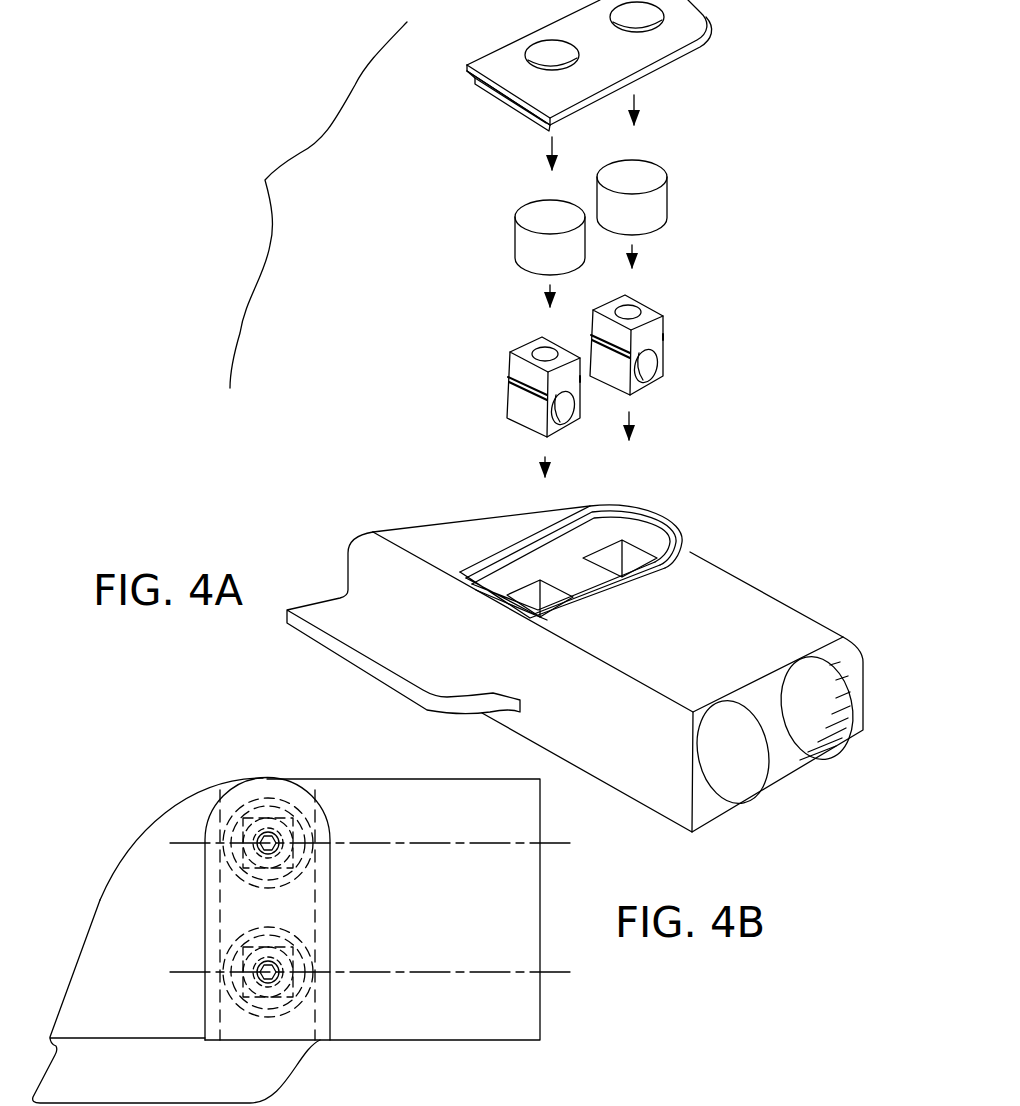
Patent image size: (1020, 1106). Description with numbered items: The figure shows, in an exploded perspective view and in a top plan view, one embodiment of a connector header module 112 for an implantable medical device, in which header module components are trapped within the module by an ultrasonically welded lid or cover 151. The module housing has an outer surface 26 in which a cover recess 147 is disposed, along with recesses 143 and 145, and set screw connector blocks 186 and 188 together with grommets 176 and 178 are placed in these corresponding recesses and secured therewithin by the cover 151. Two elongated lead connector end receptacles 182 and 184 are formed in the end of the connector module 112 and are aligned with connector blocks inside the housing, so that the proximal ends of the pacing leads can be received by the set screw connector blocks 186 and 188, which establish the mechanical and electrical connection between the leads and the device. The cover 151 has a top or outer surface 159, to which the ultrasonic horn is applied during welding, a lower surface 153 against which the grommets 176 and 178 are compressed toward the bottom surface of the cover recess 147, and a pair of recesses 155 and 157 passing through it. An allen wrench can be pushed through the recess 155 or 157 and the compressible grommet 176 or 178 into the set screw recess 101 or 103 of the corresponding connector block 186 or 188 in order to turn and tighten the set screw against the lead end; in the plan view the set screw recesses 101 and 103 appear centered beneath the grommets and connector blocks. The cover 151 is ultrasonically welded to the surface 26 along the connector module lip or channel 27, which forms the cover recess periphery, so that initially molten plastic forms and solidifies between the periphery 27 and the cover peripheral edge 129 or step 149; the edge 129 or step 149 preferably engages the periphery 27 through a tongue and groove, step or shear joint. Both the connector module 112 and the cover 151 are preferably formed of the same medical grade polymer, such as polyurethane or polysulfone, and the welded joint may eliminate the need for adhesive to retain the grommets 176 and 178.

In FIG. 4A, the surface of connector module 26 is at (578, 656).
In FIG. 4B, the surface of connector module 26 is at (450, 790).
In FIG. 4A, the lip or channel 27 is at (667, 537).
In FIG. 4B, the set screw recess 101 is at (315, 840).
In FIG. 4B, the set screw recess 103 is at (315, 975).
In FIG. 4A, the connector header module 112 is at (311, 205).
In FIG. 4B, the connector header module 112 is at (160, 774).
In FIG. 4A, the cover peripheral edge 129 is at (673, 67).
In FIG. 4A, the recess 143 is at (527, 597).
In FIG. 4A, the recess 145 is at (627, 552).
In FIG. 4A, the cover recess 147 is at (573, 560).
In FIG. 4A, the step 149 is at (645, 80).
In FIG. 4B, the step 149 is at (215, 932).
In FIG. 4A, the cover 151 is at (614, 73).
In FIG. 4B, the cover 151 is at (258, 790).
In FIG. 4A, the lower surface of cover 153 is at (507, 103).
In FIG. 4A, the recess 155 is at (553, 53).
In FIG. 4A, the recess 157 is at (702, 47).
In FIG. 4A, the top or outer surface of cover 159 is at (590, 34).
In FIG. 4A, the grommet 176 is at (515, 235).
In FIG. 4B, the grommet 176 is at (313, 1000).
In FIG. 4A, the grommet 178 is at (667, 197).
In FIG. 4B, the grommet 178 is at (293, 820).
In FIG. 4A, the lead connector end receptacle 182 is at (730, 785).
In FIG. 4A, the lead connector end receptacle 184 is at (830, 752).
In FIG. 4A, the set screw connector block 186 is at (507, 377).
In FIG. 4B, the set screw connector block 186 is at (318, 955).
In FIG. 4A, the set screw connector block 188 is at (662, 326).
In FIG. 4B, the set screw connector block 188 is at (318, 870).